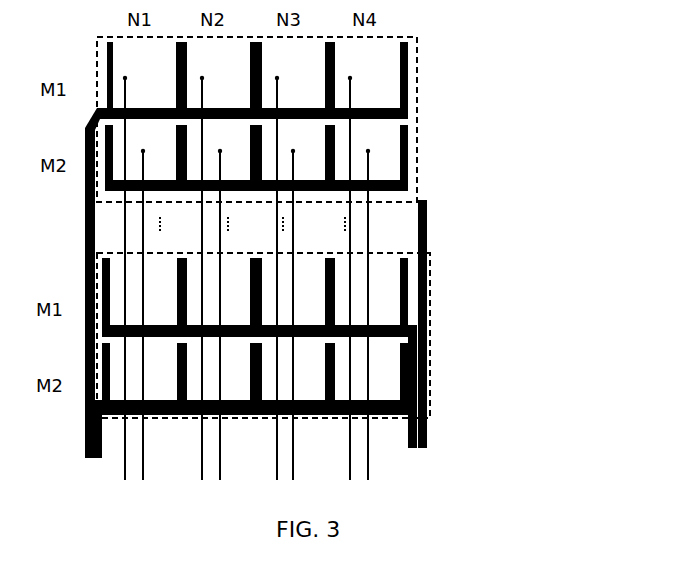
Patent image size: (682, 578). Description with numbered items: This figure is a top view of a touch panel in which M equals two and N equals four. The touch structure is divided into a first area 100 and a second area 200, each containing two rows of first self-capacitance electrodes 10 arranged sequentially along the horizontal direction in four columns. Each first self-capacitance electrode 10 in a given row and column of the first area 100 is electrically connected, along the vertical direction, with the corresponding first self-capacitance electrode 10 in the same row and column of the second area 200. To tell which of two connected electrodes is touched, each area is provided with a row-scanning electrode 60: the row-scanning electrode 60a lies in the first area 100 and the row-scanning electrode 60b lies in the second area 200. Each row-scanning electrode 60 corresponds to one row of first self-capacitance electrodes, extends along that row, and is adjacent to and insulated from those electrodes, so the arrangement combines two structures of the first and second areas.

The first self-capacitance electrode 10 is at (372, 62).
The first area 100 is at (417, 123).
The second area 200 is at (430, 332).
The row-scanning electrode 60 is at (392, 191).
The row-scanning electrode 60a is at (408, 80).
The row-scanning electrode 60b is at (408, 279).